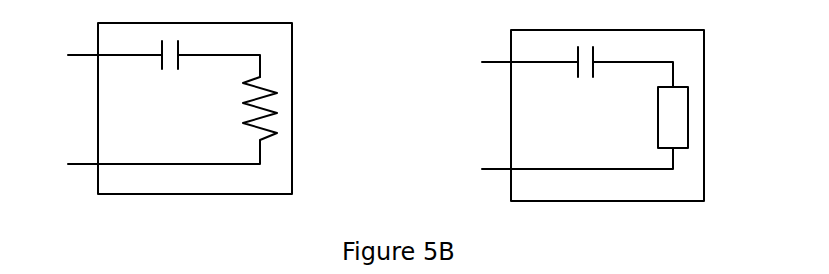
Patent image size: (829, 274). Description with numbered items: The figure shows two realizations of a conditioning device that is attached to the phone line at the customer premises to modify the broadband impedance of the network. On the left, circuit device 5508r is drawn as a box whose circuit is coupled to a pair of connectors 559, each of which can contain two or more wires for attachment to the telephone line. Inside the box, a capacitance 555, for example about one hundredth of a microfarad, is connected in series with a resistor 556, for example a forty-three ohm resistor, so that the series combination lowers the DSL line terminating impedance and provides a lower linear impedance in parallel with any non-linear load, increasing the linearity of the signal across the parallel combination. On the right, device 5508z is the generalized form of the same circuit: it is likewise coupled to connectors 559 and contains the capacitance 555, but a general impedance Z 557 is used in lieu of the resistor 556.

The capacitance 555 is at (182, 44).
The resistor 556 is at (265, 141).
The general impedance Z 557 is at (683, 149).
The connectors 559 is at (82, 58).
The circuit device 5508r is at (293, 110).
The generalized circuit device 5508z is at (704, 117).